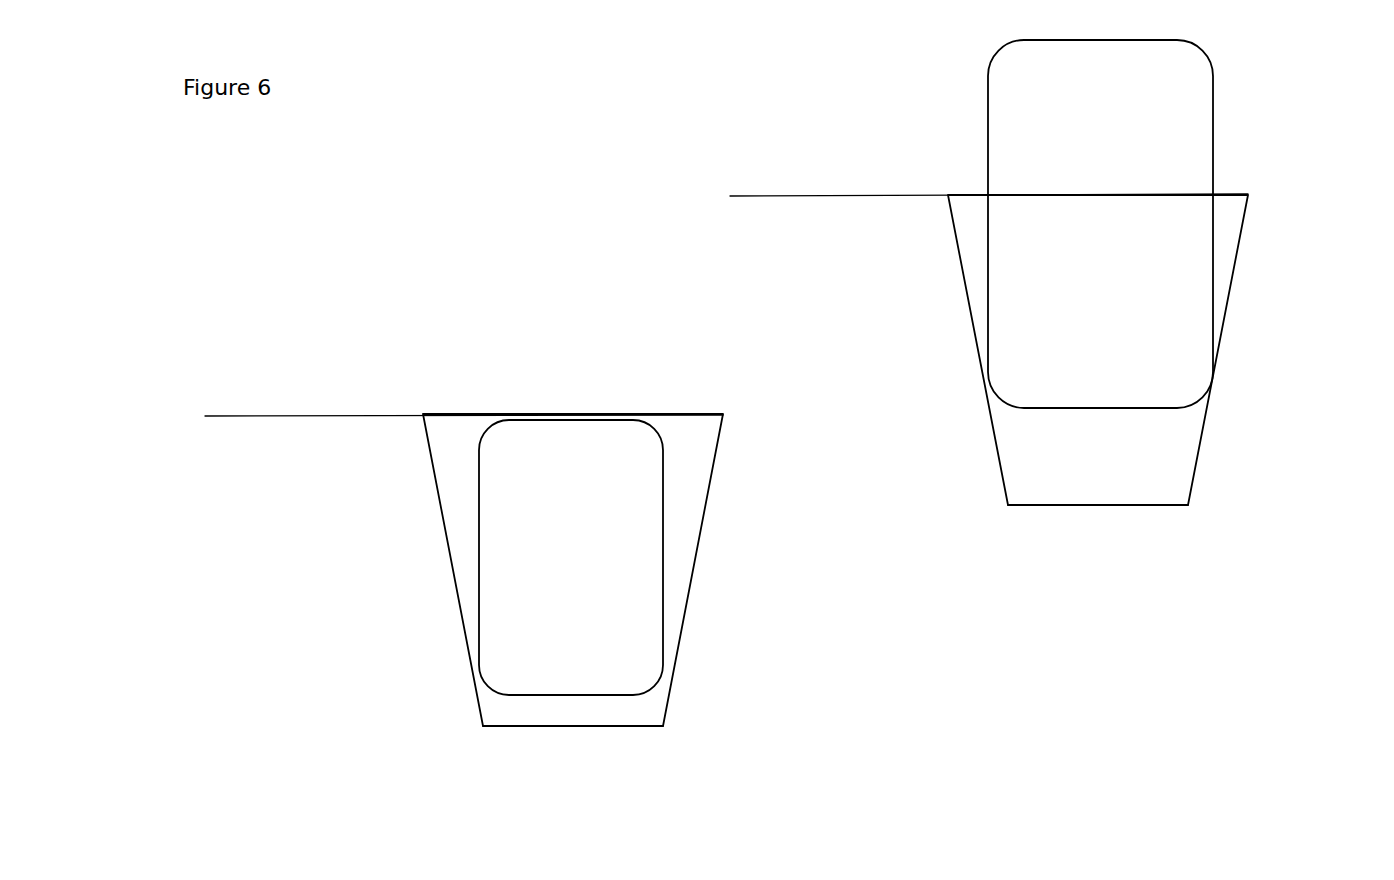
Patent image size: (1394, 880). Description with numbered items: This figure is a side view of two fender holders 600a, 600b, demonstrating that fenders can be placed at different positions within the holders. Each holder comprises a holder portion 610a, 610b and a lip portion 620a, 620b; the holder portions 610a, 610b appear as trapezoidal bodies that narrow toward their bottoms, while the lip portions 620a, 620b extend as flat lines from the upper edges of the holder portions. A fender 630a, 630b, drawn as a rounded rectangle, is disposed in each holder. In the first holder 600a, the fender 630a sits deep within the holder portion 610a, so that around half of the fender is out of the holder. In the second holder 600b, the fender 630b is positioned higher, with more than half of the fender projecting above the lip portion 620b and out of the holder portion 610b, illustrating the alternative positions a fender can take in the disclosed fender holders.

The fender holder 600a is at (606, 570).
The holder portion 610a is at (713, 562).
The lip portion 620a is at (263, 407).
The fender 630a is at (554, 449).
The fender holder 600b is at (1166, 350).
The holder portion 610b is at (1113, 522).
The lip portion 620b is at (790, 187).
The fender 630b is at (1080, 229).